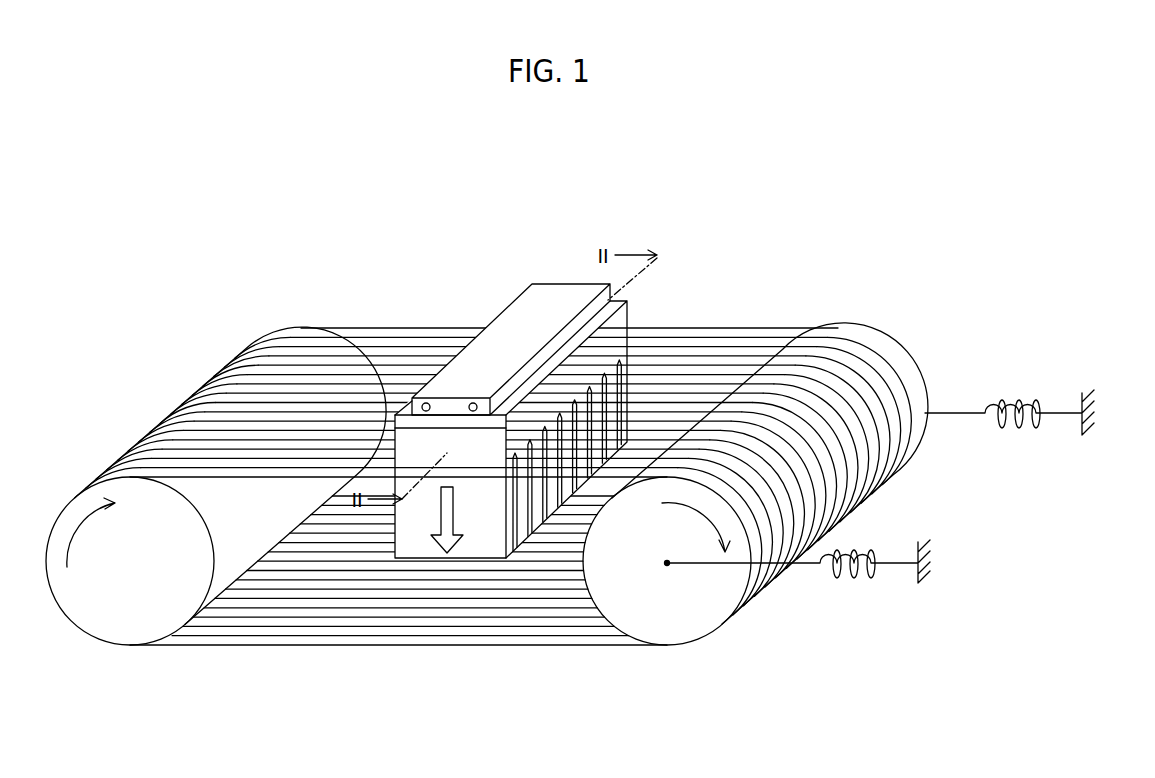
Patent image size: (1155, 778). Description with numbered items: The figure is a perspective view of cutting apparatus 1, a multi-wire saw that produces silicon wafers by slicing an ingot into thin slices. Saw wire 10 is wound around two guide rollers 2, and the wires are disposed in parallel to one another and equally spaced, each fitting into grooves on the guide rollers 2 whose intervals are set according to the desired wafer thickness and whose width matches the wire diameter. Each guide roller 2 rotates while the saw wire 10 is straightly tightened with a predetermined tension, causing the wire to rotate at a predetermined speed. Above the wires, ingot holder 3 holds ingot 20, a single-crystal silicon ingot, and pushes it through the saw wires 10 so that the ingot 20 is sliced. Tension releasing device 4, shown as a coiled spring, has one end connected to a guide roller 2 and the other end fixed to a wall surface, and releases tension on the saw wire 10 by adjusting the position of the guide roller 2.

The cutting apparatus 1 is at (870, 256).
The guide roller 2 is at (105, 618).
The ingot holder 3 is at (525, 315).
The tension releasing device 4 is at (1010, 400).
The saw wire 10 is at (238, 450).
The ingot 20 is at (415, 547).